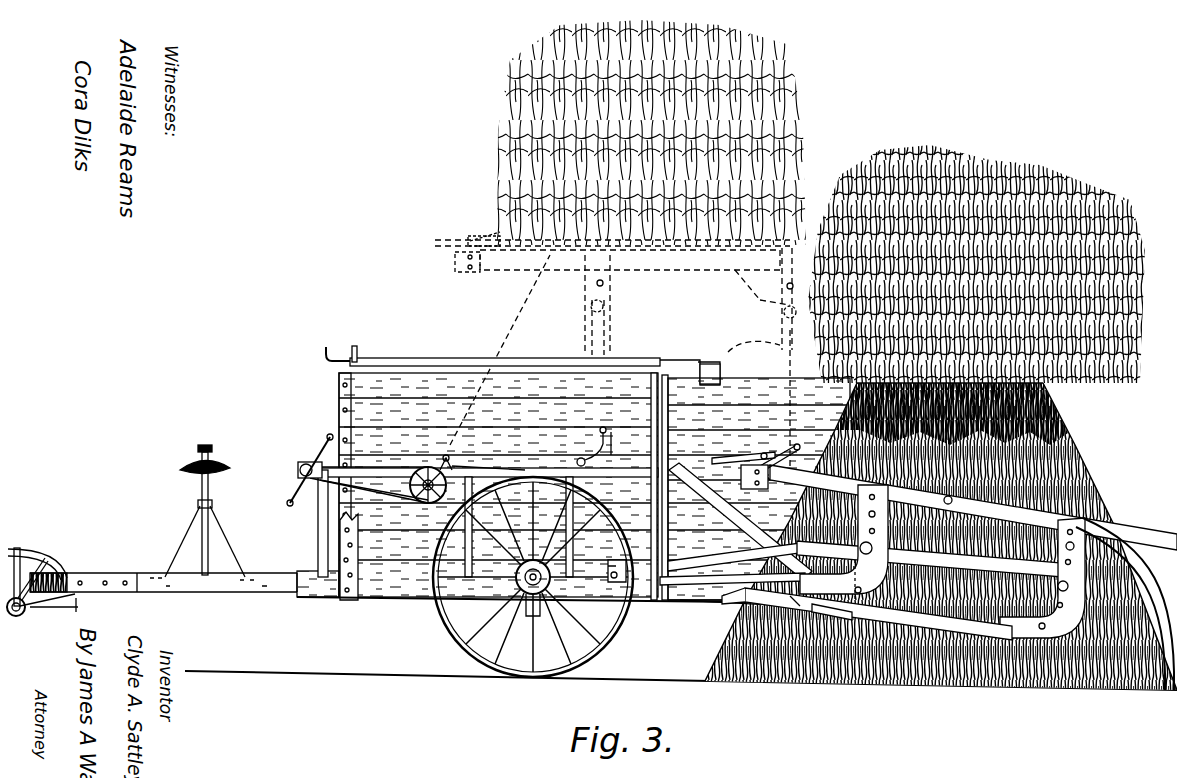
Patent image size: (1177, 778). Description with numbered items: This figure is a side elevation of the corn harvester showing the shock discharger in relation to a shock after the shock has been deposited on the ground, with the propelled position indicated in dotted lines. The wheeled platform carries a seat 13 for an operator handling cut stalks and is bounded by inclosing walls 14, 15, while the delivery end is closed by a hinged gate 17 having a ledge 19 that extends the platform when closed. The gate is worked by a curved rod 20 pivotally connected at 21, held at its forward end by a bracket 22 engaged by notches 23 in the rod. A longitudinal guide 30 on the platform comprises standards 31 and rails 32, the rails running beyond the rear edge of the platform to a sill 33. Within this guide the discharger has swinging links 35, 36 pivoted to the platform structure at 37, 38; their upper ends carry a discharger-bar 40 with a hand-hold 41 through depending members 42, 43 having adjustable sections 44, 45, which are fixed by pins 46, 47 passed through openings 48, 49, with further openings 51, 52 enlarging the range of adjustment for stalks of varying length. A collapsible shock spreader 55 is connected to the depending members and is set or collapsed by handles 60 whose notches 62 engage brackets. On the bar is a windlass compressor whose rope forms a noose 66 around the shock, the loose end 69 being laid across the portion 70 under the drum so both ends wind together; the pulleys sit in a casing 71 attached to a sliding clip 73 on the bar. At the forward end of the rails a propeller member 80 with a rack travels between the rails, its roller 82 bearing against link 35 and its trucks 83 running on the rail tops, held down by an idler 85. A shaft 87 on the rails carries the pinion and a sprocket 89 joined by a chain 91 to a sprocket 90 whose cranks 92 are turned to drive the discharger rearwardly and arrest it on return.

The seat 13 is at (194, 458).
The inclosing wall 14 is at (388, 580).
The inclosing wall 15 is at (338, 396).
The gate 17 is at (759, 489).
The ledge 19 is at (690, 603).
The rod 20 is at (340, 356).
The pivotal connection 21 is at (716, 366).
The bracket 22 is at (360, 355).
The notches 23 is at (381, 368).
The guide 30 is at (497, 467).
The standards 31 is at (319, 518).
The rails 32 is at (626, 467).
The sill 33 is at (716, 604).
The swinging link 35 is at (600, 388).
The swinging link 36 is at (790, 410).
The pivot 37 is at (610, 578).
The pivot 38 is at (732, 573).
The discharger-bar 40 is at (700, 270).
The hand-hold 41 is at (454, 262).
The depending member 42 is at (574, 352).
The depending member 43 is at (913, 467).
The adjustable section 44 is at (584, 290).
The adjustable section 45 is at (788, 298).
The pin 46 is at (606, 283).
The pin 47 is at (786, 288).
The openings 48 is at (612, 300).
The openings 49 is at (790, 312).
The opening 51 is at (610, 356).
The opening 52 is at (1064, 626).
The shock spreader 55 is at (642, 366).
The handle 60 is at (738, 602).
The notches 62 is at (790, 608).
The noose 66 is at (1168, 598).
The loose end 69 is at (494, 233).
The portion 70 is at (516, 266).
The casing 71 is at (941, 536).
The clip 73 is at (927, 500).
The propeller member 80 is at (526, 468).
The roller 82 is at (604, 428).
The trucks 83 is at (580, 458).
The idler 85 is at (448, 466).
The shaft 87 is at (410, 486).
The sprocket 89 is at (434, 503).
The sprocket 90 is at (298, 470).
The chain 91 is at (388, 496).
The cranks 92 is at (324, 440).